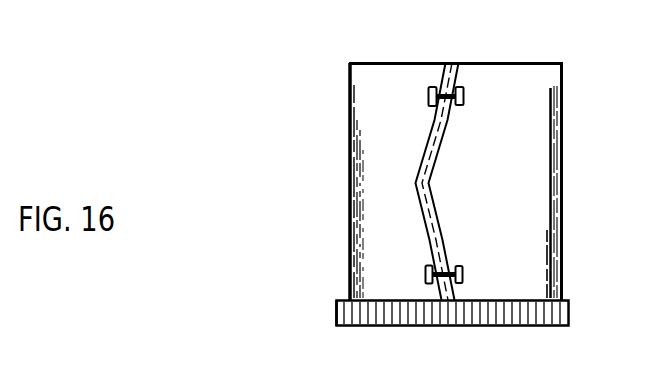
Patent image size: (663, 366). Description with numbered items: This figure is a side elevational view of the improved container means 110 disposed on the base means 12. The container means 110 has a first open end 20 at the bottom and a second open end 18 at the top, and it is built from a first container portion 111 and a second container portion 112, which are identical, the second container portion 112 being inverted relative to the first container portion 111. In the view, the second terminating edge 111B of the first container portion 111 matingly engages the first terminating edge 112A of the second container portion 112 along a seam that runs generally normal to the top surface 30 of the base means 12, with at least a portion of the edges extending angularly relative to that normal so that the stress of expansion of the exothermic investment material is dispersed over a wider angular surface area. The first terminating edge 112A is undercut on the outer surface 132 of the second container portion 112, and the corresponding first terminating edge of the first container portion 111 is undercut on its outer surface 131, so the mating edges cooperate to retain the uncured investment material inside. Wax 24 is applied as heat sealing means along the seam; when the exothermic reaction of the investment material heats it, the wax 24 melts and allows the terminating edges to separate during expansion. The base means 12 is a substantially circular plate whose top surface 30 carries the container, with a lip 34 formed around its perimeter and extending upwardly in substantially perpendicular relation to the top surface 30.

The container means 110 is at (575, 48).
The second open end 18 is at (421, 63).
The first container portion 111 is at (348, 192).
The outer surface 131 is at (348, 252).
The second terminating edge 111B is at (430, 112).
The second container portion 112 is at (564, 115).
The outer surface 132 is at (563, 197).
The first open end 20 is at (563, 258).
The first terminating edge 112A is at (437, 150).
The wax 24 is at (428, 205).
The base means 12 is at (570, 307).
The top surface 30 is at (494, 313).
The lip 34 is at (336, 311).